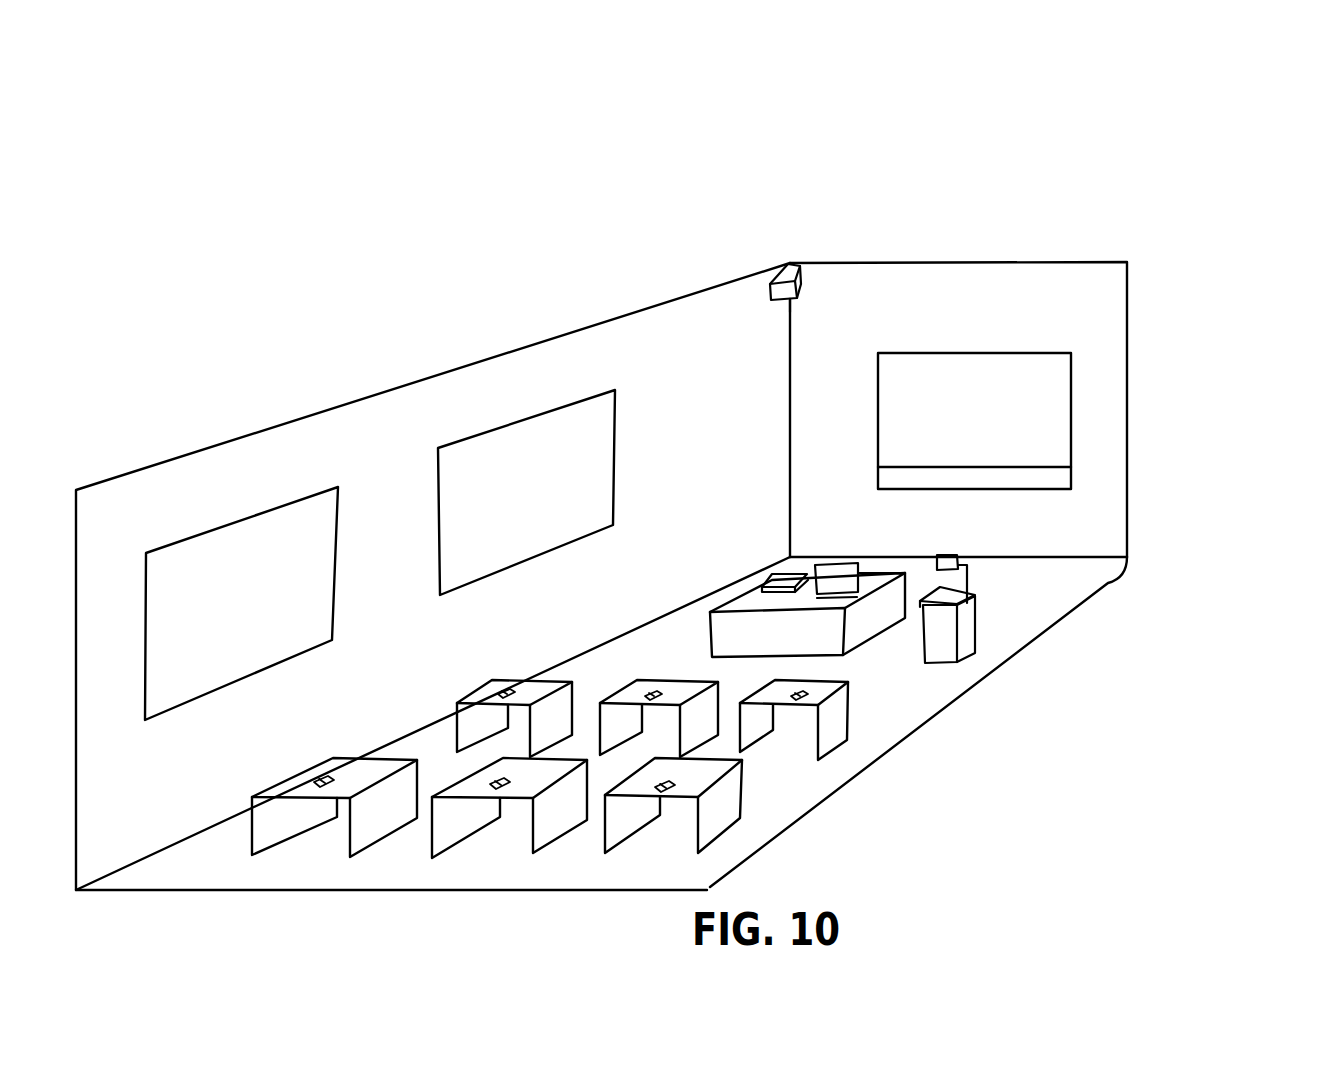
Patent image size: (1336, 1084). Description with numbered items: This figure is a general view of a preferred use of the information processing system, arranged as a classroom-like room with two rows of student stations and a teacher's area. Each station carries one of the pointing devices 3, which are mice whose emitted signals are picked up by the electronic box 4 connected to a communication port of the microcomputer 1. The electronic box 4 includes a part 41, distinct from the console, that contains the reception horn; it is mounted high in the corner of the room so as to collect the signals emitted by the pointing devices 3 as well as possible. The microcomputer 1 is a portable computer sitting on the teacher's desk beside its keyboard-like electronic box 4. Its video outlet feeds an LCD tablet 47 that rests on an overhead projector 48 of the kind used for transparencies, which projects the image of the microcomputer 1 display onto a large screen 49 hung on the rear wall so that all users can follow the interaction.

The microcomputer 1 is at (823, 565).
The pointing devices 3 is at (505, 688).
The electronic box 4 is at (762, 583).
The distinct part 41 is at (770, 273).
The LCD tablet 47 is at (975, 587).
The overhead projector 48 is at (947, 617).
The screen 49 is at (980, 423).